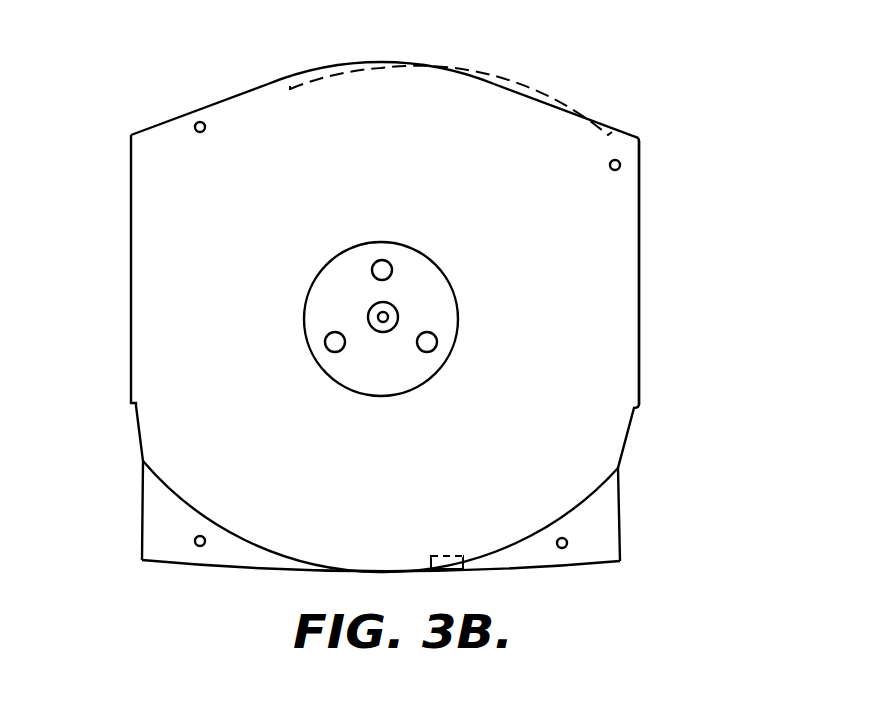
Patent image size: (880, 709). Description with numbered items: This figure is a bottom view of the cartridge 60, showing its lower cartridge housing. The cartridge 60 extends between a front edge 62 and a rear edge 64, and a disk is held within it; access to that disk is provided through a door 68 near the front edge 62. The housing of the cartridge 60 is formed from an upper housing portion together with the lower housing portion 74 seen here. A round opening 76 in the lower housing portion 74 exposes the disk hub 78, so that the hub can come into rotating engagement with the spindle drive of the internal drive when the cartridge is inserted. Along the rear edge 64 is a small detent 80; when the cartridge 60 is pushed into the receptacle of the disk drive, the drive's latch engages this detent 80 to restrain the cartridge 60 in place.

The cartridge 60 is at (480, 322).
The front edge 62 is at (218, 100).
The rear edge 64 is at (188, 570).
The door 68 is at (465, 76).
The lower housing portion 74 is at (640, 324).
The opening 76 is at (412, 250).
The disk hub 78 is at (323, 308).
The detent 80 is at (452, 570).